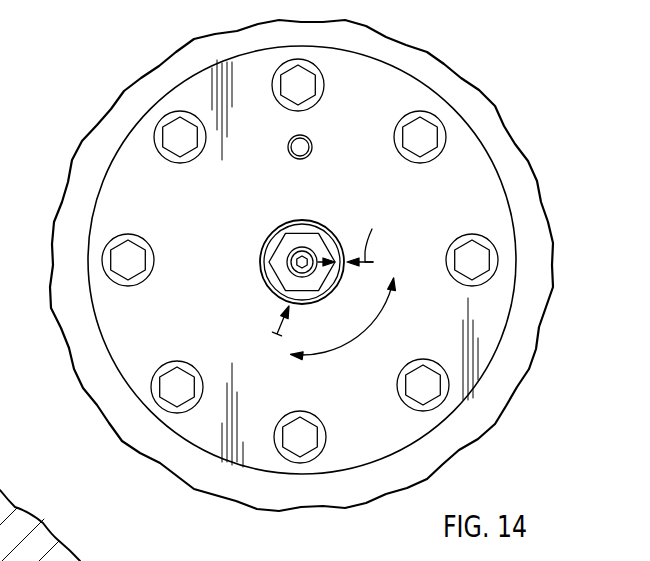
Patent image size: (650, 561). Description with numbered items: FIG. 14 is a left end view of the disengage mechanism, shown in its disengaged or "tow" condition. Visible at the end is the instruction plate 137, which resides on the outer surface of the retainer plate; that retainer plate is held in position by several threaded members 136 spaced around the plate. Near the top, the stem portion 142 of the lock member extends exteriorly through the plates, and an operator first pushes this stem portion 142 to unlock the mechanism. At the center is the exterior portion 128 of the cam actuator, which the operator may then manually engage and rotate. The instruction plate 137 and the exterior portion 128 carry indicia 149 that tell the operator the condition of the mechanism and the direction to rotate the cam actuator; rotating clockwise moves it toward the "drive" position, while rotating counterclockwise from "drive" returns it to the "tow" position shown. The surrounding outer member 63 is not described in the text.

The wheel rim 63 is at (60, 282).
The instruction plate 137 is at (190, 95).
The threaded members 136 is at (130, 257).
The stem portion 142 is at (296, 142).
The exterior portion 128 is at (268, 261).
The indicia 149 is at (323, 256).